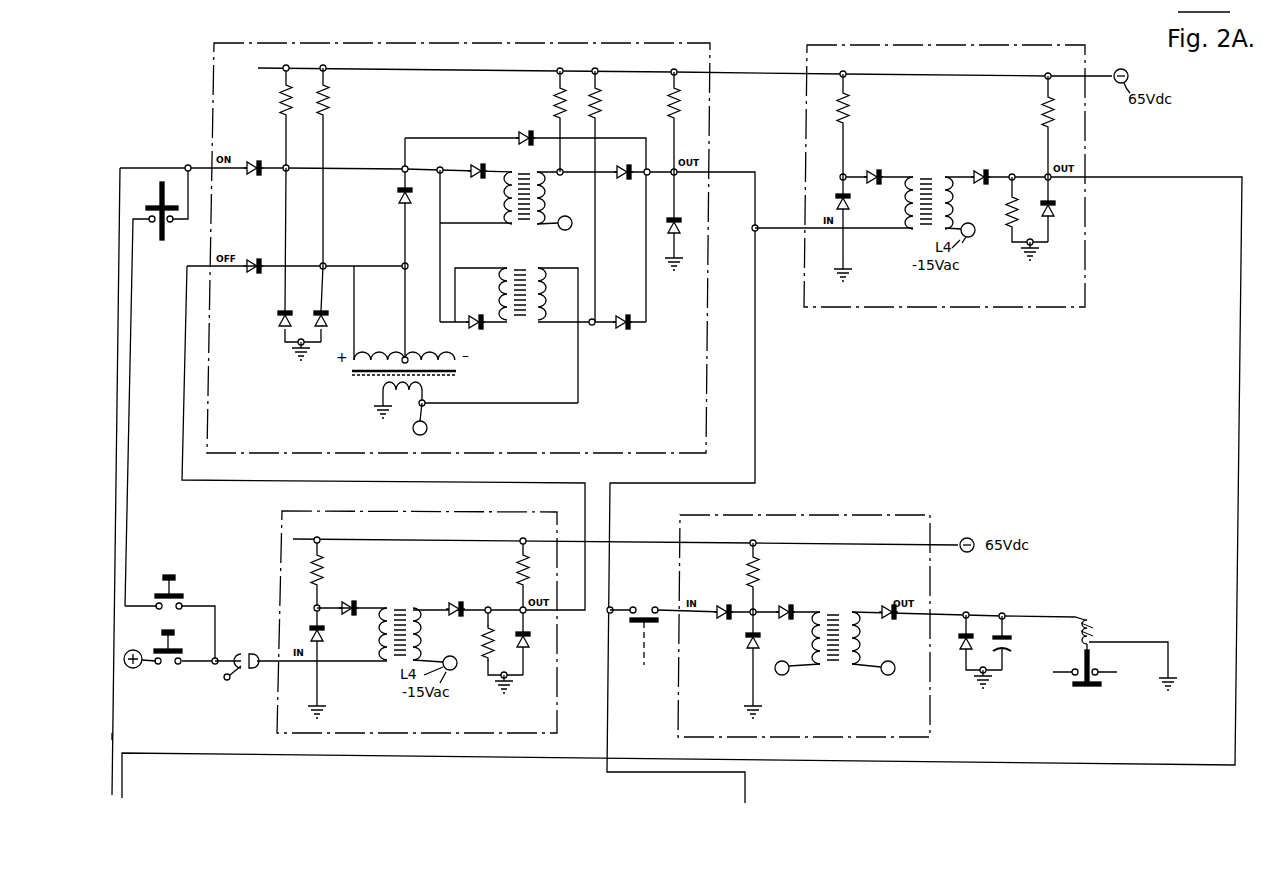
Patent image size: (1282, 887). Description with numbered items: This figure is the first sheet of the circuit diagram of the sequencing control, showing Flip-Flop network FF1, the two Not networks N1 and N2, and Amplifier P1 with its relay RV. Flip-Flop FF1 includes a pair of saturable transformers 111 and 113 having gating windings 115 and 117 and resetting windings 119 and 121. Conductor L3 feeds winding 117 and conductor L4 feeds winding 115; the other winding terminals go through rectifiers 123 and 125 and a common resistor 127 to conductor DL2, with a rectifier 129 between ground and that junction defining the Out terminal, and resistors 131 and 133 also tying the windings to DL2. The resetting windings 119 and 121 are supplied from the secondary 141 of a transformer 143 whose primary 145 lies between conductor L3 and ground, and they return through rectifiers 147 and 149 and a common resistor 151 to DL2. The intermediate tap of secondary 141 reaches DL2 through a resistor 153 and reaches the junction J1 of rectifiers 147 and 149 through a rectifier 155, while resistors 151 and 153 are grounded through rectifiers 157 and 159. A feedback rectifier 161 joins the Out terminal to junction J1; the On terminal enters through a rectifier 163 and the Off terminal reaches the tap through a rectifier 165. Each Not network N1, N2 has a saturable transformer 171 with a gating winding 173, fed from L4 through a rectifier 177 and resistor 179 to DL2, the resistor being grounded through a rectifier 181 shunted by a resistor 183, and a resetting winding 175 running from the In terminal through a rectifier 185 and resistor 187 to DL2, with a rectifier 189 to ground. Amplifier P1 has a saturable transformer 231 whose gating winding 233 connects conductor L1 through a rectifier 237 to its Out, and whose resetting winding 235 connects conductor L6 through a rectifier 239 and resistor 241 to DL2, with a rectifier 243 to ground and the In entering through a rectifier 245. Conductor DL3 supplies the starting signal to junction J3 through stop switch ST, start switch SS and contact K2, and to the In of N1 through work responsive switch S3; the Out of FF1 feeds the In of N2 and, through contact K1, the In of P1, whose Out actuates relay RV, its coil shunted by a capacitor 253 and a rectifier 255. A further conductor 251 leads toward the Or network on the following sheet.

The saturable transformer 111 is at (525, 179).
The saturable transformer 113 is at (543, 335).
The gating winding 115 is at (558, 198).
The gating winding 117 is at (542, 292).
The resetting winding 119 is at (504, 206).
The resetting winding 121 is at (505, 290).
The rectifier 123 is at (623, 178).
The rectifier 125 is at (624, 330).
The common resistor 127 is at (668, 108).
The rectifier 129 is at (680, 220).
The resistor 131 is at (553, 104).
The resistor 133 is at (601, 104).
The secondary 141 is at (390, 356).
The transformer 143 is at (459, 375).
The primary 145 is at (480, 392).
The rectifier 147 is at (474, 168).
The rectifier 149 is at (475, 330).
The common resistor 151 is at (280, 100).
The resistor 153 is at (329, 100).
The rectifier 155 is at (398, 198).
The rectifier 157 is at (278, 318).
The rectifier 159 is at (321, 311).
The rectifier 161 is at (518, 135).
The rectifier 163 is at (255, 162).
The rectifier 165 is at (255, 260).
The saturable transformer 171 is at (663, 404).
The gating winding 173 is at (953, 189).
The resetting winding 175 is at (906, 212).
The rectifier 177 is at (981, 170).
The resistor 179 is at (1041, 110).
The rectifier 181 is at (1058, 214).
The resistor 183 is at (1005, 210).
The rectifier 185 is at (873, 170).
The resistor 187 is at (849, 106).
The rectifier 189 is at (836, 200).
The saturable transformer 231 is at (836, 625).
The gating winding 233 is at (858, 640).
The resetting winding 235 is at (813, 638).
The rectifier 237 is at (889, 605).
The rectifier 239 is at (785, 605).
The resistor 241 is at (746, 568).
The rectifier 243 is at (745, 640).
The rectifier 245 is at (721, 605).
The conductor 251 is at (112, 733).
The capacitor 253 is at (1010, 652).
The rectifier 255 is at (963, 657).
The Flip-Flop network FF1 is at (706, 423).
The Not network N1 is at (281, 524).
The Not network N2 is at (1085, 277).
The Amplifier P1 is at (864, 515).
The contact K1 is at (644, 606).
The contact K2 is at (158, 206).
The relay RV is at (1094, 626).
The junction J1 is at (403, 167).
The junction J3 is at (186, 166).
The conductor DL2 is at (738, 72).
The conductor DL3 is at (146, 652).
The start switch SS is at (176, 596).
The stop switch ST is at (176, 660).
The work responsive switch S3 is at (254, 654).
The conductor L1 is at (895, 675).
The conductor L3 is at (432, 430).
The conductor L4 is at (560, 237).
The conductor L6 is at (784, 673).